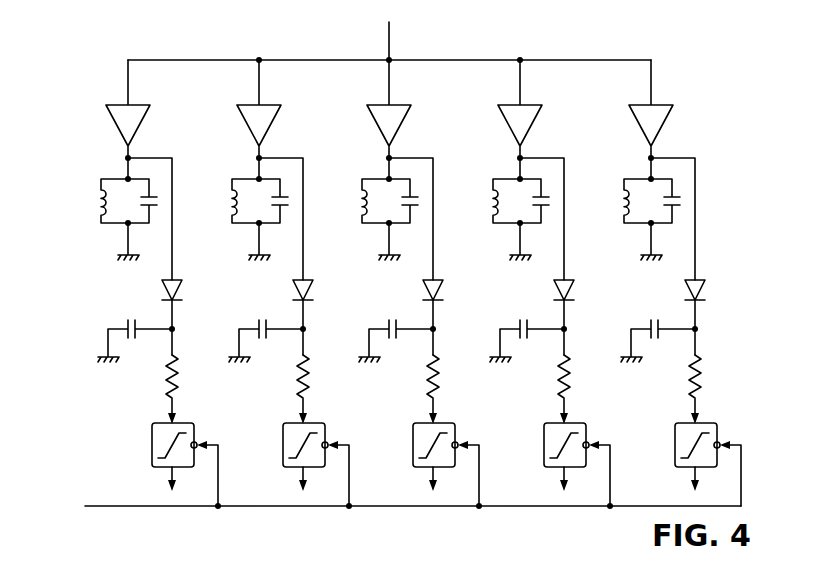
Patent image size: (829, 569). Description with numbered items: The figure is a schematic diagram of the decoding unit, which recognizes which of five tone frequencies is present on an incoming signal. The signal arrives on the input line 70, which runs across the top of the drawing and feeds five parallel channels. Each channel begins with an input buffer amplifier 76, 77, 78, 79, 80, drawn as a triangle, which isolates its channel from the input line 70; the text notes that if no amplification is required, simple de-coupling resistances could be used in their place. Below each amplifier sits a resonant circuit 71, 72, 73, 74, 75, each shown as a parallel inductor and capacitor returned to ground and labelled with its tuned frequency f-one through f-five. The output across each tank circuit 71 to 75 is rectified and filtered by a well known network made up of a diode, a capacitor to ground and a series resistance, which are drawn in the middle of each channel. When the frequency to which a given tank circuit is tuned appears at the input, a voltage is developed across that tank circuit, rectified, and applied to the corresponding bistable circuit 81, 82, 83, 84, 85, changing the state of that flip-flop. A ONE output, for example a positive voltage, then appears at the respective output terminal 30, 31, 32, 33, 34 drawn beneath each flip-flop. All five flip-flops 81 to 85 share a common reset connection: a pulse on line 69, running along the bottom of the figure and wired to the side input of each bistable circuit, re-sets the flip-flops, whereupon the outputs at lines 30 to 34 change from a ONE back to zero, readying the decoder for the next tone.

The input line 70 is at (389, 35).
The reset line 69 is at (401, 498).
The resonant circuit 71 is at (107, 180).
The resonant circuit 72 is at (246, 204).
The resonant circuit 73 is at (376, 204).
The resonant circuit 74 is at (507, 204).
The resonant circuit 75 is at (638, 204).
The input buffer amplifier 76 is at (147, 113).
The input buffer amplifier 77 is at (276, 119).
The input buffer amplifier 78 is at (406, 119).
The input buffer amplifier 79 is at (537, 119).
The input buffer amplifier 80 is at (668, 119).
The bistable circuit 81 is at (187, 431).
The bistable circuit 82 is at (318, 455).
The bistable circuit 83 is at (448, 455).
The bistable circuit 84 is at (579, 455).
The bistable circuit 85 is at (710, 453).
The output terminal 30 is at (187, 485).
The output terminal 31 is at (318, 485).
The output terminal 32 is at (448, 485).
The output terminal 33 is at (579, 485).
The output terminal 34 is at (710, 485).